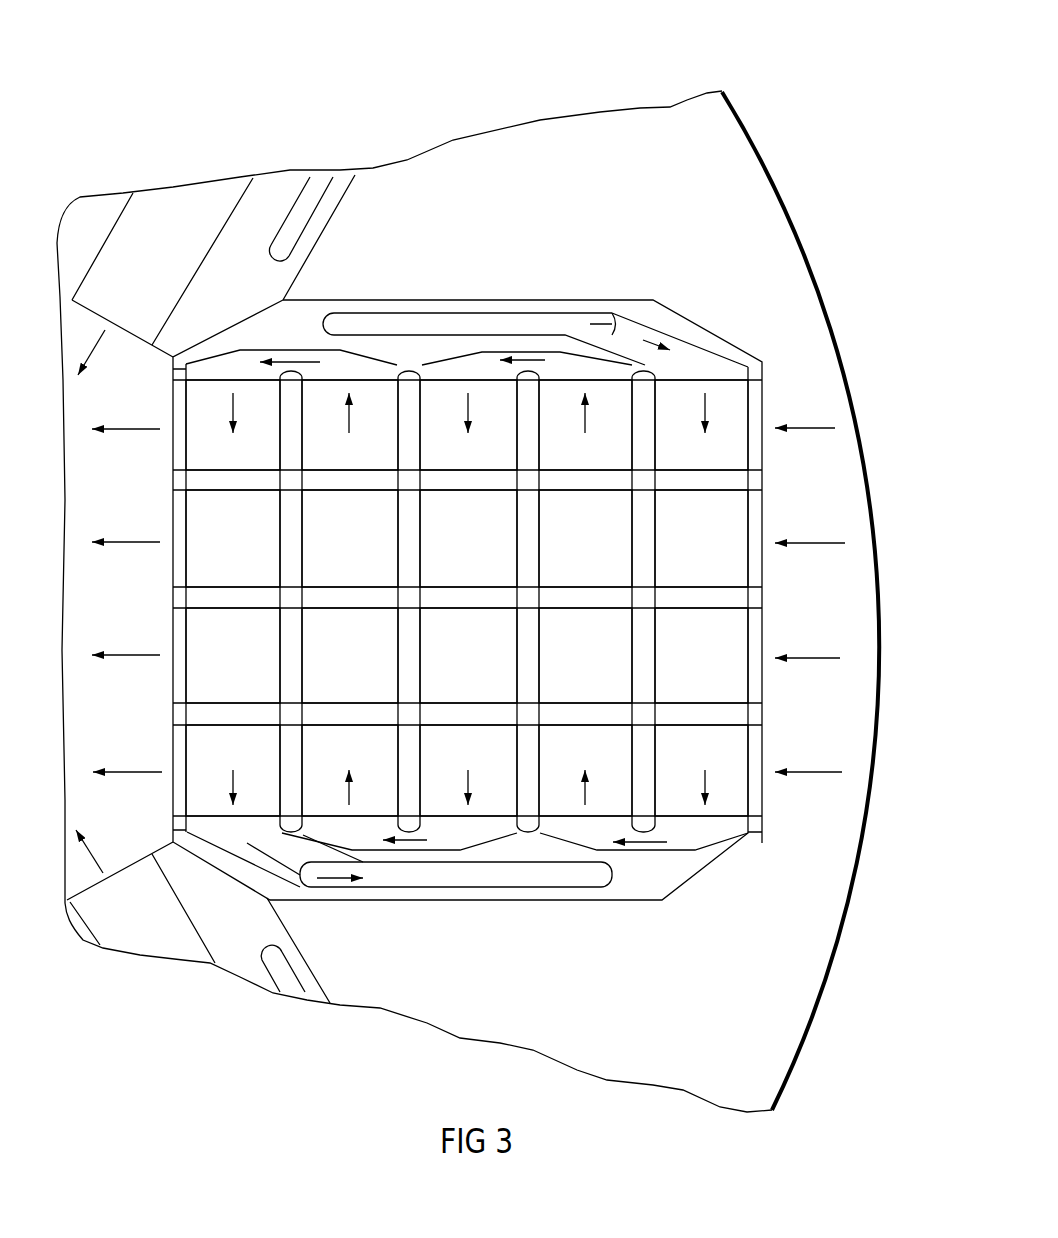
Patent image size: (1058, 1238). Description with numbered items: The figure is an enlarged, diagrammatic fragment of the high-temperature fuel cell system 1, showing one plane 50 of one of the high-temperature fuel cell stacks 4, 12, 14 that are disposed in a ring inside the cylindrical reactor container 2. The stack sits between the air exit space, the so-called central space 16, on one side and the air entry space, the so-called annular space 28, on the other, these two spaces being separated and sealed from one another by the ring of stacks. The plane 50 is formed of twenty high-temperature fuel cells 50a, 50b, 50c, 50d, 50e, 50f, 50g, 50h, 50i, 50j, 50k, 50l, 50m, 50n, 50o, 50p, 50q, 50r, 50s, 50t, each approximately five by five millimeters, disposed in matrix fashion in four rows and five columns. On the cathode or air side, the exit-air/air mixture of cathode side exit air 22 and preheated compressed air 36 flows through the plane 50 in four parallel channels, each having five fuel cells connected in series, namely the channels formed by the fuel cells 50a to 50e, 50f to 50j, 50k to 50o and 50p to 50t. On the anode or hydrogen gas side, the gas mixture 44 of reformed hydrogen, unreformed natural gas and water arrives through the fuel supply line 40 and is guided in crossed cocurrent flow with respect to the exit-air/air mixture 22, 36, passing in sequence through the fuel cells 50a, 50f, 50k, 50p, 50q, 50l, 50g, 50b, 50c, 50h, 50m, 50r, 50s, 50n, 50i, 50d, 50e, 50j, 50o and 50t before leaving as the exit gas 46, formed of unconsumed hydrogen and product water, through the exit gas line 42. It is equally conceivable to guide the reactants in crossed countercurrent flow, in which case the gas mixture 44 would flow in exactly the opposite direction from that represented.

The high-temperature fuel cell system 1 is at (750, 60).
The cylindrical reactor container 2 is at (808, 243).
The high-temperature fuel cell stack 4 is at (333, 213).
The high-temperature fuel cell stack 12 is at (308, 957).
The high-temperature fuel cell stack 14 is at (547, 298).
The central space 16 is at (94, 609).
The cathode side exit air 22 is at (138, 429).
The annular space 28 is at (727, 165).
The preheated compressed air 36 is at (812, 428).
The fuel supply line 40 is at (470, 312).
The exit gas line 42 is at (452, 890).
The gas mixture 44 is at (643, 340).
The exit gas 46 is at (257, 850).
The plane 50 is at (697, 896).
The high-temperature fuel cell 50a is at (701, 425).
The high-temperature fuel cell 50b is at (585, 425).
The high-temperature fuel cell 50c is at (468, 425).
The high-temperature fuel cell 50d is at (350, 425).
The high-temperature fuel cell 50e is at (233, 425).
The high-temperature fuel cell 50f is at (701, 538).
The high-temperature fuel cell 50g is at (585, 538).
The high-temperature fuel cell 50h is at (468, 538).
The high-temperature fuel cell 50i is at (350, 538).
The high-temperature fuel cell 50j is at (233, 538).
The high-temperature fuel cell 50k is at (701, 655).
The high-temperature fuel cell 50l is at (585, 655).
The high-temperature fuel cell 50m is at (468, 655).
The high-temperature fuel cell 50n is at (350, 655).
The high-temperature fuel cell 50o is at (233, 655).
The high-temperature fuel cell 50p is at (701, 770).
The high-temperature fuel cell 50q is at (585, 770).
The high-temperature fuel cell 50r is at (468, 770).
The high-temperature fuel cell 50s is at (350, 770).
The high-temperature fuel cell 50t is at (233, 770).